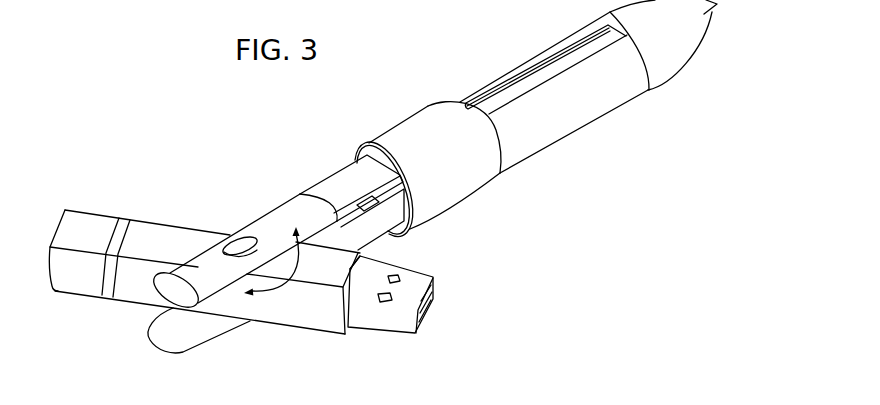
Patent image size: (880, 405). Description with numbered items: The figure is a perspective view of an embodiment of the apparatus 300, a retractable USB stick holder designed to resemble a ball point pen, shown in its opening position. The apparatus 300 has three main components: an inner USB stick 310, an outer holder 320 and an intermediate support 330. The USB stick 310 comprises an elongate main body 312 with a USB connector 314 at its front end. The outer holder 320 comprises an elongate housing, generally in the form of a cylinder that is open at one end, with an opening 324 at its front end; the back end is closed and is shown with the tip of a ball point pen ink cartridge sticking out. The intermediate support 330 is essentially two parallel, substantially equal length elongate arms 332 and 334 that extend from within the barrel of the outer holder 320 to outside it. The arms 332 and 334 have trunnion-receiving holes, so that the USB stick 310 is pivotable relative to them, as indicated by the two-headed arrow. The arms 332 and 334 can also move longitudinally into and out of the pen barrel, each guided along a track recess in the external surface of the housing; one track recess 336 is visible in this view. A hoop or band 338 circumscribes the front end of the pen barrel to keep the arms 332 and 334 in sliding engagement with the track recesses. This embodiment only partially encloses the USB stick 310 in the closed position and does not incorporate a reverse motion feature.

The apparatus 300 is at (296, 106).
The inner USB stick 310 is at (260, 340).
The elongate main body 312 is at (90, 298).
The USB connector 314 is at (385, 331).
The outer holder 320 is at (594, 176).
The opening 324 is at (411, 217).
The intermediate support 330 is at (249, 193).
The elongate arm 332 is at (332, 183).
The elongate arm 334 is at (388, 239).
The track recess 336 is at (554, 59).
The hoop or band 338 is at (425, 119).